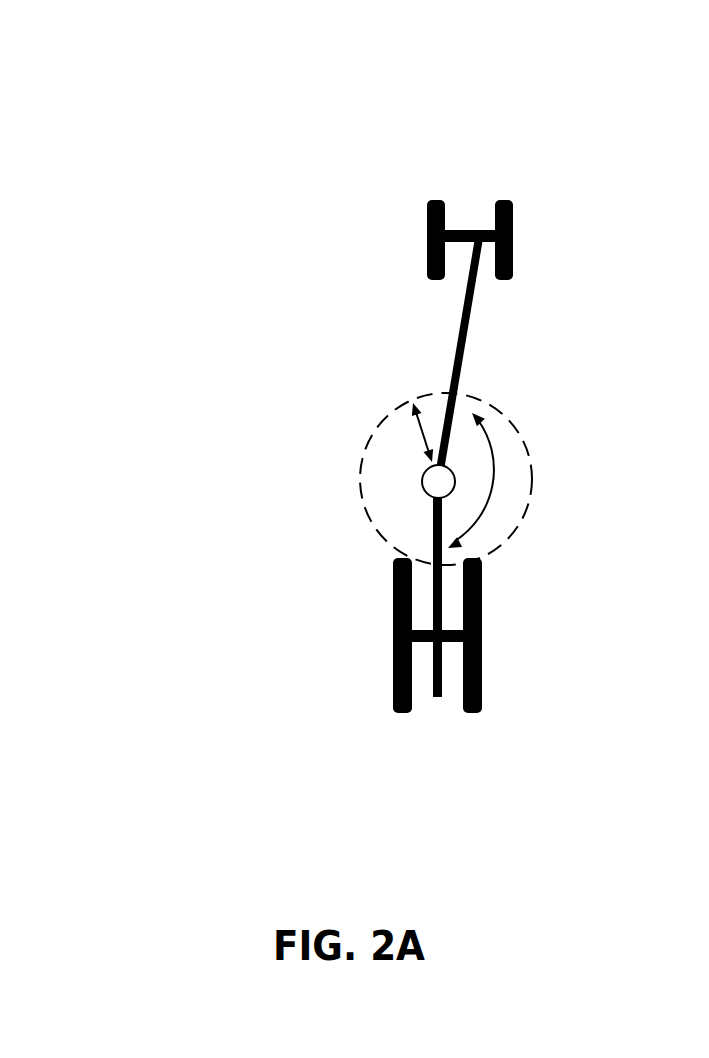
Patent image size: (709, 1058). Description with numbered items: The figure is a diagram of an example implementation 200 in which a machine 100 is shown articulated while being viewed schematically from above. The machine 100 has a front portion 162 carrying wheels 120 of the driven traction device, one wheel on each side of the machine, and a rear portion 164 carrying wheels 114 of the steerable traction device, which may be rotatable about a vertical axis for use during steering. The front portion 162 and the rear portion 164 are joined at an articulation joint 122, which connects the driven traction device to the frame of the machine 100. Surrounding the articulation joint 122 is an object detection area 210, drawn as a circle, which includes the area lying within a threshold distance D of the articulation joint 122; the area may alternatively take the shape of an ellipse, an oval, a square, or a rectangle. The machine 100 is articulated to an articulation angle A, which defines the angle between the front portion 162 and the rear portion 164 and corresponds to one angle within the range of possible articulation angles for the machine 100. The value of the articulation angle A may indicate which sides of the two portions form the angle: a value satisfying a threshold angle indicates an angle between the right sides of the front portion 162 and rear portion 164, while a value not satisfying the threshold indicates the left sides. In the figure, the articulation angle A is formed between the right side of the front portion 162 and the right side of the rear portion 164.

The example implementation 200 is at (240, 73).
The machine 100 is at (538, 156).
The wheels 120 is at (498, 194).
The front portion 162 is at (383, 226).
The rear portion 164 is at (528, 581).
The articulation joint 122 is at (422, 488).
The object detection area 210 is at (360, 480).
The wheels 114 is at (462, 713).
The threshold distance D is at (375, 441).
The articulation angle A is at (494, 466).